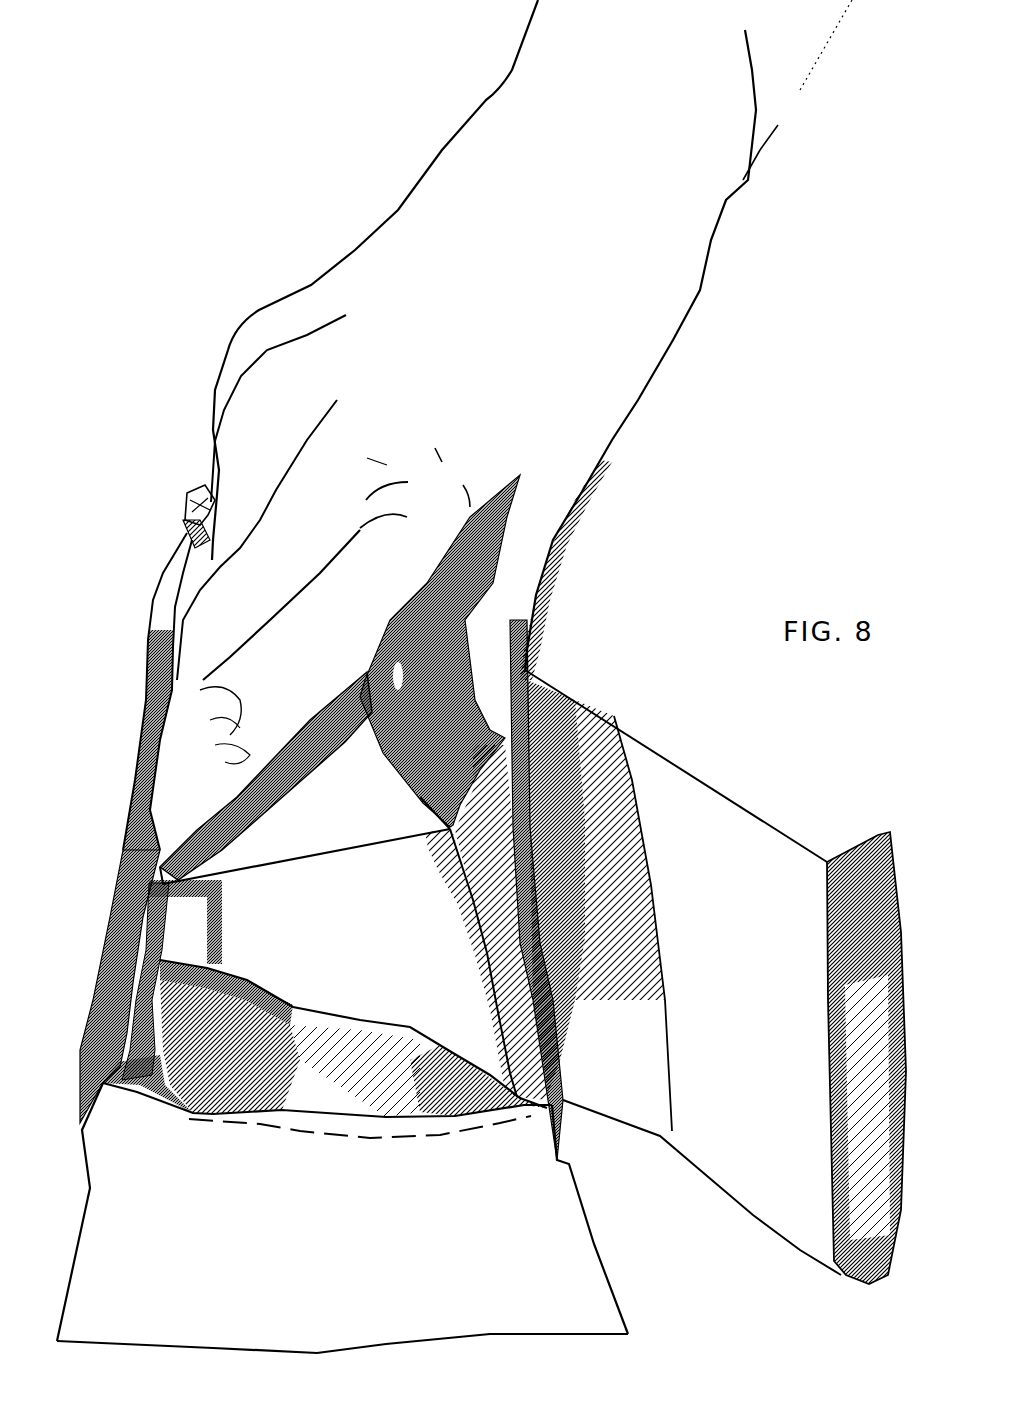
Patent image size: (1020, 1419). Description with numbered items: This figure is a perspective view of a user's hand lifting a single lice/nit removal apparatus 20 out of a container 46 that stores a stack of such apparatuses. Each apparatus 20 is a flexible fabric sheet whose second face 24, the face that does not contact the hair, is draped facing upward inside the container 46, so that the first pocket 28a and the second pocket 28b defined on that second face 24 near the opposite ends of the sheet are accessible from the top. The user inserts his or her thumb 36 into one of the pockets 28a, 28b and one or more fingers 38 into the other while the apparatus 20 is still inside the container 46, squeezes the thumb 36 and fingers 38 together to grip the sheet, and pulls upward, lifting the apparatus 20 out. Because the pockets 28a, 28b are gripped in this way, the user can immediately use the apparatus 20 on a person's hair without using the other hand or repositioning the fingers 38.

The lice/nit removal apparatus 20 is at (332, 820).
The second face 24 is at (302, 811).
The first pocket 28a is at (420, 797).
The second pocket 28b is at (180, 730).
The thumb 36 is at (500, 633).
The fingers 38 is at (165, 570).
The container 46 is at (566, 682).